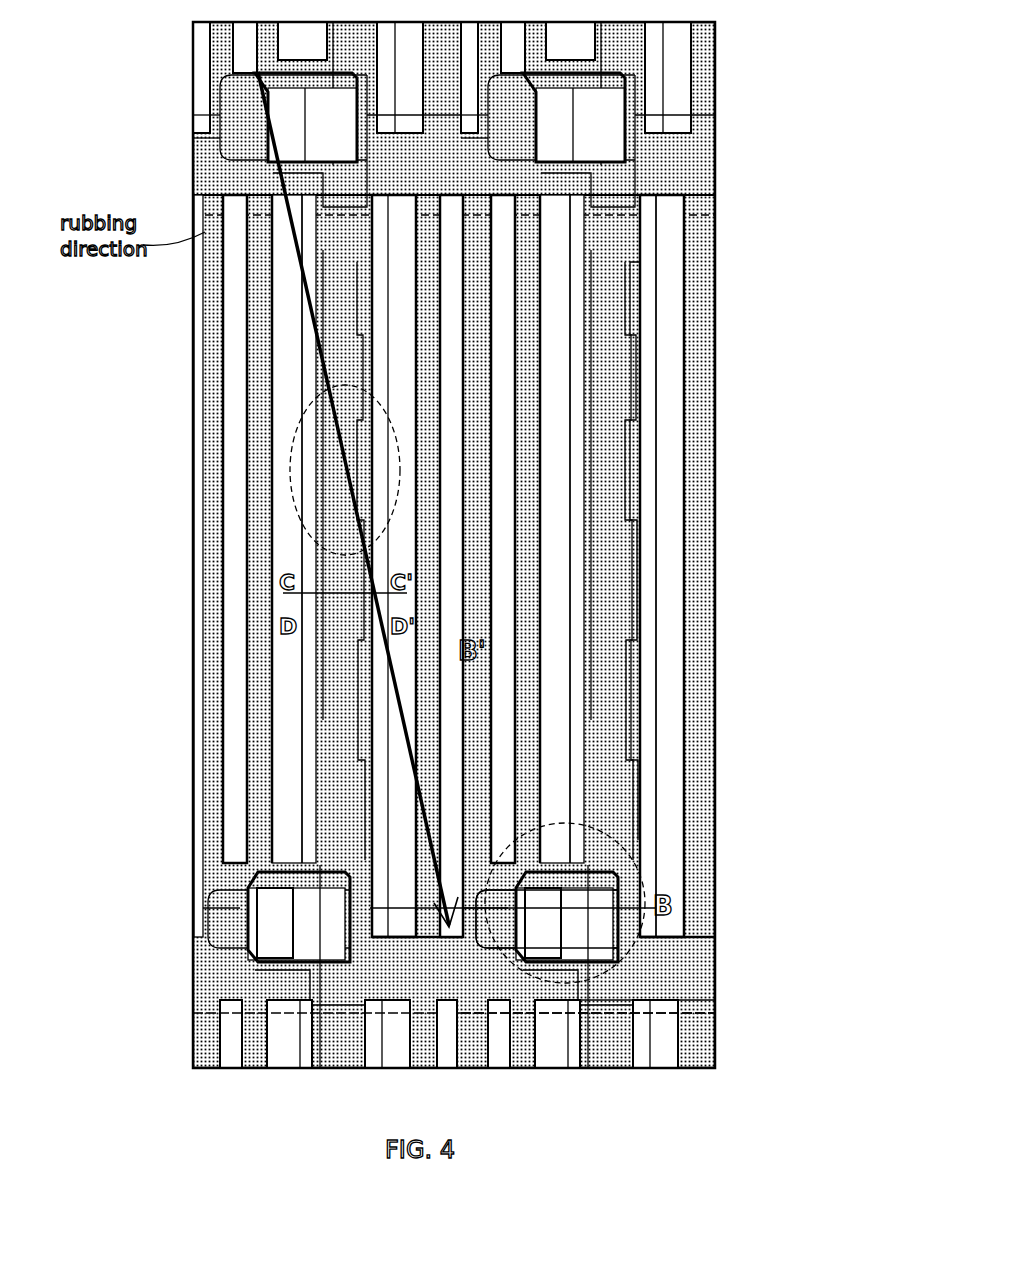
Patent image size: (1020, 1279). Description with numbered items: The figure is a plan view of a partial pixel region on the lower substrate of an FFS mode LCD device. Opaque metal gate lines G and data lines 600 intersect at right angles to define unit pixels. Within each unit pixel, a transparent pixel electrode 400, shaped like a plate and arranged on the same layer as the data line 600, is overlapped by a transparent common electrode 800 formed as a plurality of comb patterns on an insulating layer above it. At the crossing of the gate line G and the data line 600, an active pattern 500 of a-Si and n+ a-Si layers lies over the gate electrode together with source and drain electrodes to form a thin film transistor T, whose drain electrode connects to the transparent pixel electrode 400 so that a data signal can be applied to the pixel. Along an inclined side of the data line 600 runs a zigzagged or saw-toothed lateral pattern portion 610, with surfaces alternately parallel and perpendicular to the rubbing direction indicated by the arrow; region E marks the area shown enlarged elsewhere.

The data line 600 is at (640, 240).
The transparent common electrode 800 is at (640, 497).
The transparent pixel electrode 400 is at (575, 735).
The active pattern 500 is at (590, 990).
The lateral pattern portion 610 is at (322, 545).
The thin film transistor T is at (650, 862).
The gate line G is at (665, 1015).
The enlarged region E is at (262, 383).